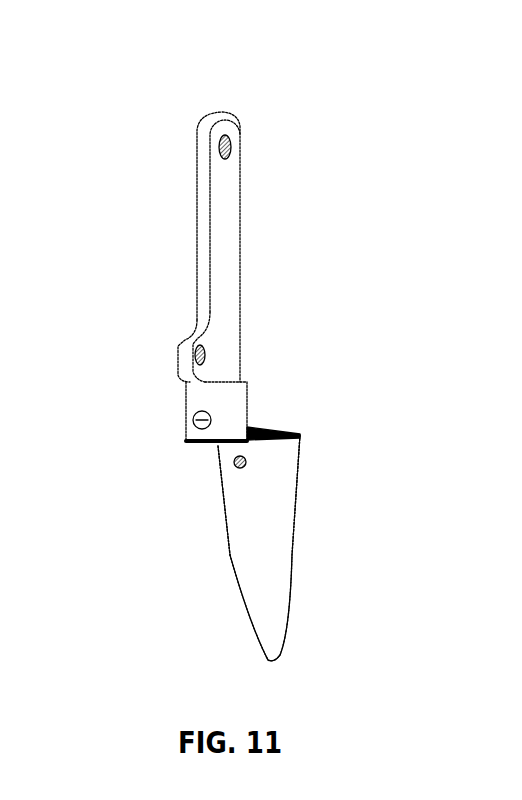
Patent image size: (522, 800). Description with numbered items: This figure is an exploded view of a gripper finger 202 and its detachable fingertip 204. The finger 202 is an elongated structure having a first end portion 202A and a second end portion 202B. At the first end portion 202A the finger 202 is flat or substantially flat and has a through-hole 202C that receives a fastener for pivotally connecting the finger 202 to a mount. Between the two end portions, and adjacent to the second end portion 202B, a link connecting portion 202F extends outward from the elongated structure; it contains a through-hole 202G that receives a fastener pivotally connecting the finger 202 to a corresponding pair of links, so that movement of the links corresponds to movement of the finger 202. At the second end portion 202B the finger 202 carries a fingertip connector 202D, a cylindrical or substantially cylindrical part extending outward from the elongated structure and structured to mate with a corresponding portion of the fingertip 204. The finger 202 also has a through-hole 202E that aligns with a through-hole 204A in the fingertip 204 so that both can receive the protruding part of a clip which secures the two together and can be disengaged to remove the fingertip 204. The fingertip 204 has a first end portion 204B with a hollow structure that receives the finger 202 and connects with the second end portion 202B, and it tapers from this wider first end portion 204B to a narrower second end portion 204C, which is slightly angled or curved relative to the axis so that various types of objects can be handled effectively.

The finger 202 is at (303, 105).
The first end portion 202A is at (183, 120).
The second end portion 202B is at (175, 388).
The through-hole 202C is at (232, 150).
The fingertip connector 202D is at (220, 402).
The through-hole 202E is at (210, 420).
The link connecting portion 202F is at (170, 317).
The through-hole 202G is at (205, 355).
The fingertip 204 is at (360, 506).
The through-hole 204A is at (245, 465).
The first end portion 204B is at (205, 452).
The second end portion 204C is at (242, 665).